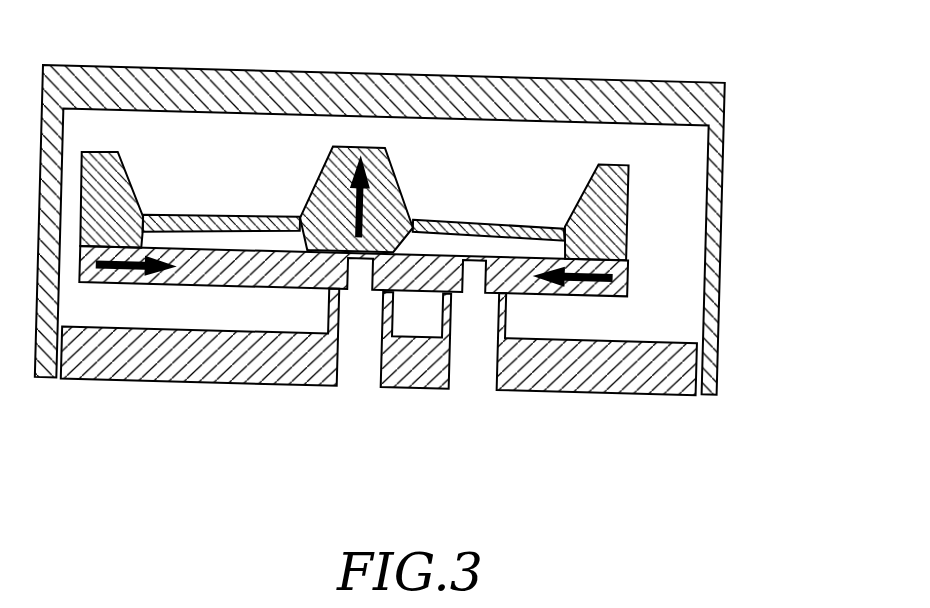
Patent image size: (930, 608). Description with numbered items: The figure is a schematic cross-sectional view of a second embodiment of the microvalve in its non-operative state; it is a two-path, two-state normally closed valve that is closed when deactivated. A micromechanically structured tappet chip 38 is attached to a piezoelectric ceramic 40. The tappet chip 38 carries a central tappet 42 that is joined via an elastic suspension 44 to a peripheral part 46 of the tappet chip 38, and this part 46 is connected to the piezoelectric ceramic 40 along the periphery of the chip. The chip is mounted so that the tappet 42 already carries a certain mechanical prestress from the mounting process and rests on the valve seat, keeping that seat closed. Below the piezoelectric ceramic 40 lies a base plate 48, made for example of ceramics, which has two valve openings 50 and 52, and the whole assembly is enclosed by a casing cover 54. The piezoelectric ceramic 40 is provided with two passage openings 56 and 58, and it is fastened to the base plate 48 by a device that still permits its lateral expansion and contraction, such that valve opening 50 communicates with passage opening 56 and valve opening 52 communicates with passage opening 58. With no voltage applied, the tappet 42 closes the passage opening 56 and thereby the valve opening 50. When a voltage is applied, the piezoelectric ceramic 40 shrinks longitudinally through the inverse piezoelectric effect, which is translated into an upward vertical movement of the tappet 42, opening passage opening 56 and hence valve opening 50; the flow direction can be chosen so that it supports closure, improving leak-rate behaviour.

The tappet chip 38 is at (612, 217).
The piezoelectric ceramic 40 is at (620, 272).
The tappet 42 is at (378, 155).
The elastic suspension 44 is at (497, 350).
The part of the tappet chip 46 is at (95, 165).
The base plate 48 is at (615, 355).
The valve opening 50 is at (360, 367).
The valve opening 52 is at (475, 360).
The casing cover 54 is at (700, 103).
The passage opening 56 is at (356, 265).
The passage opening 58 is at (500, 343).